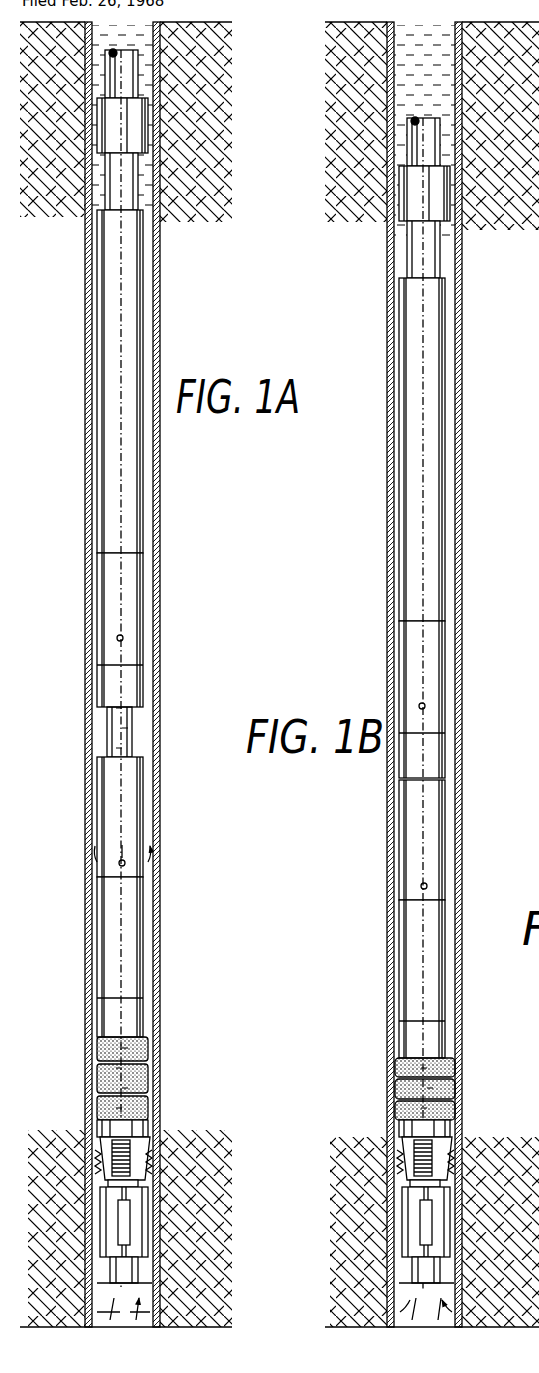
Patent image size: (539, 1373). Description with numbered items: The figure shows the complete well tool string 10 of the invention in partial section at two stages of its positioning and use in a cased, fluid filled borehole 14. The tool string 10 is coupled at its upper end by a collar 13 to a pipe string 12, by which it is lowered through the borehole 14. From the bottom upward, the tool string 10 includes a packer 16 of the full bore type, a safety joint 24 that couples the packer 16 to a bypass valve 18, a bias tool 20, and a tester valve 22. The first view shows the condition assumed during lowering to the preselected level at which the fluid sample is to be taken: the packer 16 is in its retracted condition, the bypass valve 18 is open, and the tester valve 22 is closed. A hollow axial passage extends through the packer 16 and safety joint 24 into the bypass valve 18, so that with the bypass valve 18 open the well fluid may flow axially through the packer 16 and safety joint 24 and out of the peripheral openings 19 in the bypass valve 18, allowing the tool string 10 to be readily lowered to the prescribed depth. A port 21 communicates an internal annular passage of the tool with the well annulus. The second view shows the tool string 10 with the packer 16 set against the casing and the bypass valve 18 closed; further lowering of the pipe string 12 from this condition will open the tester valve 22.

In FIG. 1A, the tool string 10 is at (150, 355).
In FIG. 1B, the tool string 10 is at (453, 410).
In FIG. 1A, the pipe string 12 is at (134, 77).
In FIG. 1B, the pipe string 12 is at (437, 145).
In FIG. 1A, the collar 13 is at (138, 128).
In FIG. 1B, the collar 13 is at (440, 198).
In FIG. 1A, the fluid filled borehole 14 is at (98, 38).
In FIG. 1B, the fluid filled borehole 14 is at (402, 68).
In FIG. 1A, the packer 16 is at (148, 1078).
In FIG. 1B, the packer 16 is at (455, 1085).
In FIG. 1A, the bypass valve 18 is at (135, 779).
In FIG. 1B, the bypass valve 18 is at (440, 810).
In FIG. 1A, the peripheral openings 19 is at (148, 863).
In FIG. 1B, the peripheral openings 19 is at (447, 888).
In FIG. 1A, the bias tool 20 is at (137, 592).
In FIG. 1B, the bias tool 20 is at (437, 655).
In FIG. 1A, the port 21 is at (124, 638).
In FIG. 1B, the port 21 is at (426, 708).
In FIG. 1A, the tester valve 22 is at (132, 268).
In FIG. 1B, the tester valve 22 is at (437, 326).
In FIG. 1A, the safety joint 24 is at (137, 943).
In FIG. 1B, the safety joint 24 is at (440, 970).